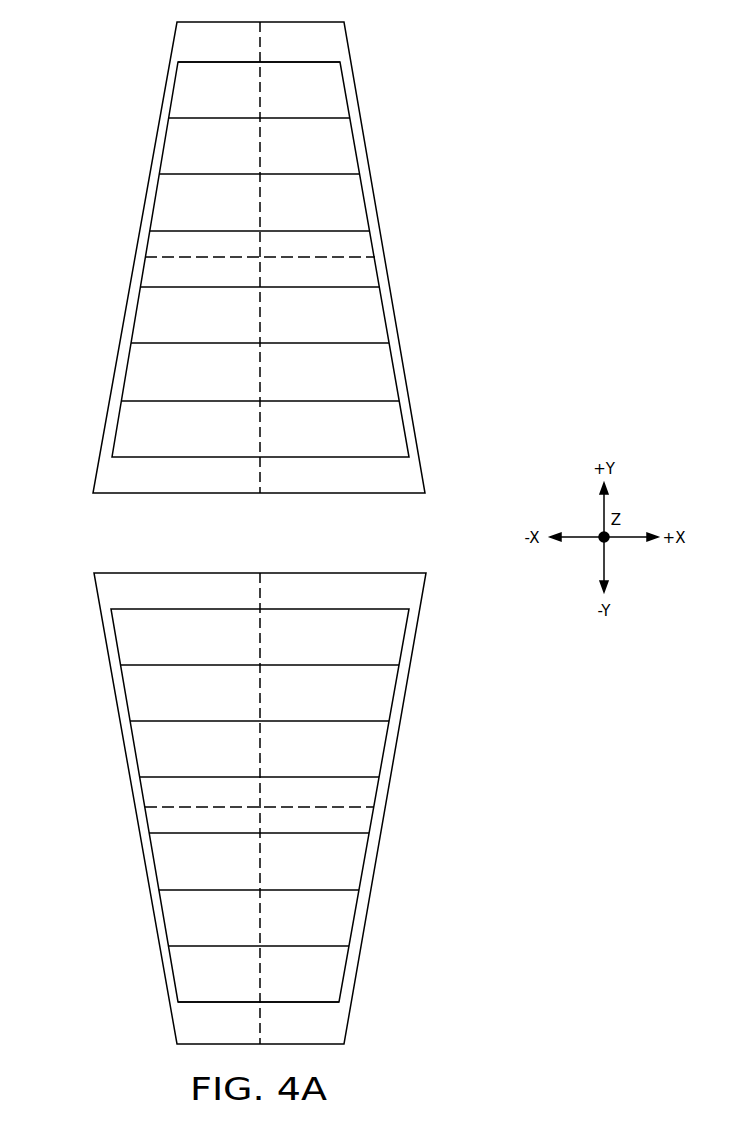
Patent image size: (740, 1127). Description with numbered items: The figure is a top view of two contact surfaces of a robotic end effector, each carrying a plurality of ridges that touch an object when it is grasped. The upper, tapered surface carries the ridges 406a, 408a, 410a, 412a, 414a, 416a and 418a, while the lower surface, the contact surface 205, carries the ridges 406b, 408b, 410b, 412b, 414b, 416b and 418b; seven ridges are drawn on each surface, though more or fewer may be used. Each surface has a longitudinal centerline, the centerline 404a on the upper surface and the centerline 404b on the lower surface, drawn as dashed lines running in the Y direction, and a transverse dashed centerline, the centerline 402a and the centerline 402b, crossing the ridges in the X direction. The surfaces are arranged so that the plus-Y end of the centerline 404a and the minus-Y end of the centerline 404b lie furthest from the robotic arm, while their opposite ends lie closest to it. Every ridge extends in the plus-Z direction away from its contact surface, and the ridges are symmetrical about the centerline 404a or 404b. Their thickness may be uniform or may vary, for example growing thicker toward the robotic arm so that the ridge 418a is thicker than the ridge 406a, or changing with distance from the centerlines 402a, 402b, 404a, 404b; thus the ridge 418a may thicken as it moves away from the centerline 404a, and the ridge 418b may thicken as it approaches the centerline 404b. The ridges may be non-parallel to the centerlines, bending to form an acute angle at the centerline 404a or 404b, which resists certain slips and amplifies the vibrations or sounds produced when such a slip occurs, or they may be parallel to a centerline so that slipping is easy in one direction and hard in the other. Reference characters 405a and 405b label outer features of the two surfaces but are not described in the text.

The contact surface 205 is at (210, 22).
The centerline 402a is at (158, 257).
The centerline 402b is at (158, 807).
The centerline 404a is at (258, 420).
The centerline 404b is at (258, 595).
The first panel 405a is at (298, 478).
The second panel 405b is at (372, 585).
The ridge 406a is at (332, 62).
The ridge 408a is at (340, 118).
The ridge 410a is at (348, 174).
The ridge 412a is at (358, 231).
The ridge 414a is at (368, 287).
The ridge 416a is at (378, 343).
The ridge 418a is at (388, 401).
The ridge 406b is at (334, 1003).
The ridge 408b is at (341, 947).
The ridge 410b is at (351, 891).
The ridge 412b is at (361, 834).
The ridge 414b is at (371, 778).
The ridge 416b is at (381, 722).
The ridge 418b is at (391, 666).